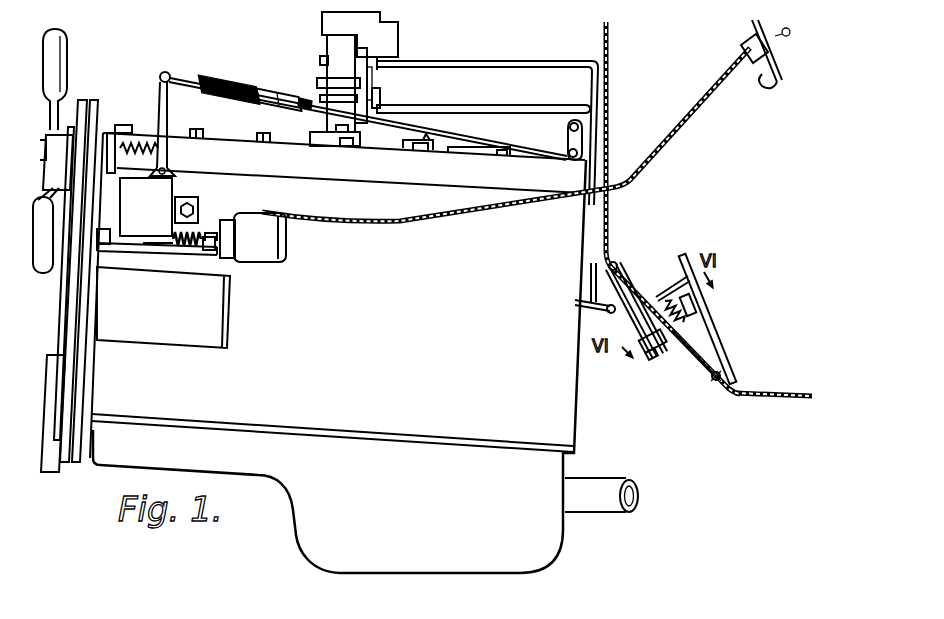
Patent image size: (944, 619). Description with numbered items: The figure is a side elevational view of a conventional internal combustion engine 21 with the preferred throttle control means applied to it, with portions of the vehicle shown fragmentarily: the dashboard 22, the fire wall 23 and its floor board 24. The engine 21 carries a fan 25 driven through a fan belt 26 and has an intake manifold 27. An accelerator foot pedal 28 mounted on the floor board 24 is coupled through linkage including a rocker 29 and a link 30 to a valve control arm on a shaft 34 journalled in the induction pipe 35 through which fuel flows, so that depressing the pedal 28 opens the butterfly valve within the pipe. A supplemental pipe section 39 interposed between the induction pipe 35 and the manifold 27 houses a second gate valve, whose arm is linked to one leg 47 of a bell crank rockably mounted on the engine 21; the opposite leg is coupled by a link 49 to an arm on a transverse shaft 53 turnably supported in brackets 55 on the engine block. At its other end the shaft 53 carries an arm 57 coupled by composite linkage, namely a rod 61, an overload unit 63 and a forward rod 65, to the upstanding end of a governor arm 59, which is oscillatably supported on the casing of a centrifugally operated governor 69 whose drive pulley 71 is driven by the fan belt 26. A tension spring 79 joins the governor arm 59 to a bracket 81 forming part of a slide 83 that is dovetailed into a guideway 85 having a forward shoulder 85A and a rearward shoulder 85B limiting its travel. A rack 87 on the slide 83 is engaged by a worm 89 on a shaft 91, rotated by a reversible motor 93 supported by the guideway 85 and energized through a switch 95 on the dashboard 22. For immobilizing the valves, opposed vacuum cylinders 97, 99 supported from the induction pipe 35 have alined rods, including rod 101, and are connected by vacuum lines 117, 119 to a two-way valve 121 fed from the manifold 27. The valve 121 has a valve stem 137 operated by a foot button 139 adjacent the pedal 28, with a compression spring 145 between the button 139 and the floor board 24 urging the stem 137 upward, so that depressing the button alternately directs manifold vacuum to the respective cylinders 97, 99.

The engine 21 is at (147, 443).
The dashboard 22 is at (781, 84).
The fire wall 23 is at (612, 35).
The floor board 24 is at (760, 397).
The fan 25 is at (68, 40).
The fan belt 26 is at (77, 349).
The intake manifold 27 is at (307, 140).
The accelerator foot pedal 28 is at (701, 297).
The rocker 29 is at (616, 268).
The link 30 is at (584, 313).
The shaft 34 is at (320, 61).
The induction pipe 35 is at (340, 46).
The supplemental pipe section 39 is at (333, 122).
The leg of bell crank 47 is at (405, 148).
The link 49 is at (457, 150).
The shaft 53 is at (574, 122).
The brackets 55 is at (554, 160).
The arm 57 is at (584, 137).
The governor arm 59 is at (160, 100).
The rod 61 is at (490, 141).
The overload unit 63 is at (268, 58).
The forward rod 65 is at (170, 78).
The governor 69 is at (157, 211).
The drive pulley 71 is at (56, 162).
The tension spring 79 is at (160, 150).
The bracket 81 is at (120, 130).
The slide 83 is at (157, 231).
The guideway 85 is at (107, 254).
The forward shoulder 85A is at (100, 251).
The rearward shoulder 85B is at (211, 216).
The rack 87 is at (168, 249).
The worm 89 is at (187, 249).
The shaft 91 is at (208, 251).
The reversible motor 93 is at (247, 263).
The switch 95 is at (770, 46).
The vacuum cylinder 97 is at (384, 43).
The vacuum cylinder 99 is at (388, 98).
The projecting rod 101 is at (358, 62).
The vacuum line 117 is at (507, 61).
The vacuum line 119 is at (503, 111).
The two-way valve 121 is at (640, 358).
The valve stem 137 is at (668, 330).
The foot button 139 is at (698, 310).
The compression spring 145 is at (700, 318).